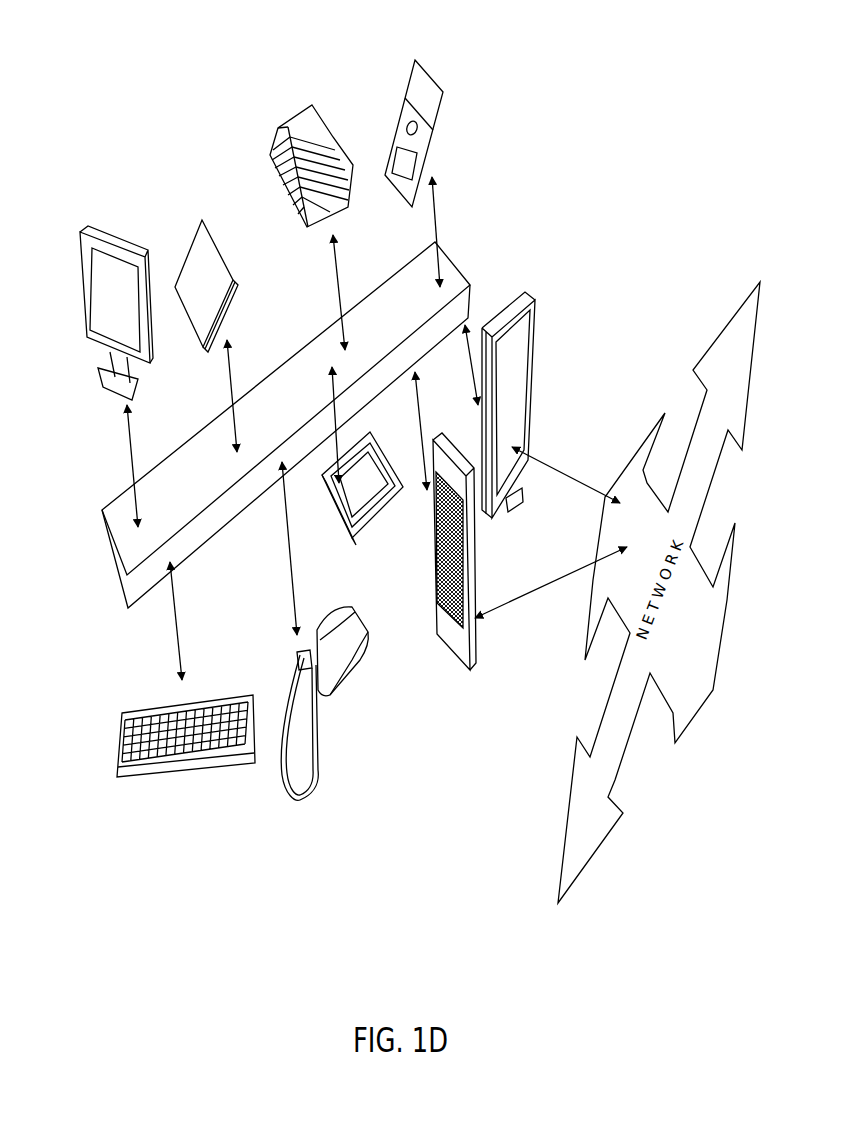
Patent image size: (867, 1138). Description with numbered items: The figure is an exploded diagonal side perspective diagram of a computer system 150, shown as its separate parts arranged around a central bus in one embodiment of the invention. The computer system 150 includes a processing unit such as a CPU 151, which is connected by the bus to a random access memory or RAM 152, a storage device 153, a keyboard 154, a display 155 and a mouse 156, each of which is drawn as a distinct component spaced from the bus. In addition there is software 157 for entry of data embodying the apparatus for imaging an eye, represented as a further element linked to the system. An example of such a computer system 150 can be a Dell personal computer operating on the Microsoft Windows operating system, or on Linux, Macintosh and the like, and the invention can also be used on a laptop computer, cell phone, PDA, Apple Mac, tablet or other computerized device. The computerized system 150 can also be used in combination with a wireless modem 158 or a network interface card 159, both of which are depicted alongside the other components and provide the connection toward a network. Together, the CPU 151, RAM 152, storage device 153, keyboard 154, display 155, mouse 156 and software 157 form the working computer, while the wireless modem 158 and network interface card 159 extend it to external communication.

The computer system 150 is at (316, 342).
The CPU 151 is at (202, 220).
The RAM 152 is at (292, 108).
The storage device 153 is at (347, 538).
The keyboard 154 is at (148, 783).
The display 155 is at (102, 232).
The mouse 156 is at (342, 697).
The software 157 is at (425, 57).
The wireless modem 158 is at (530, 292).
The network interface card 159 is at (460, 678).